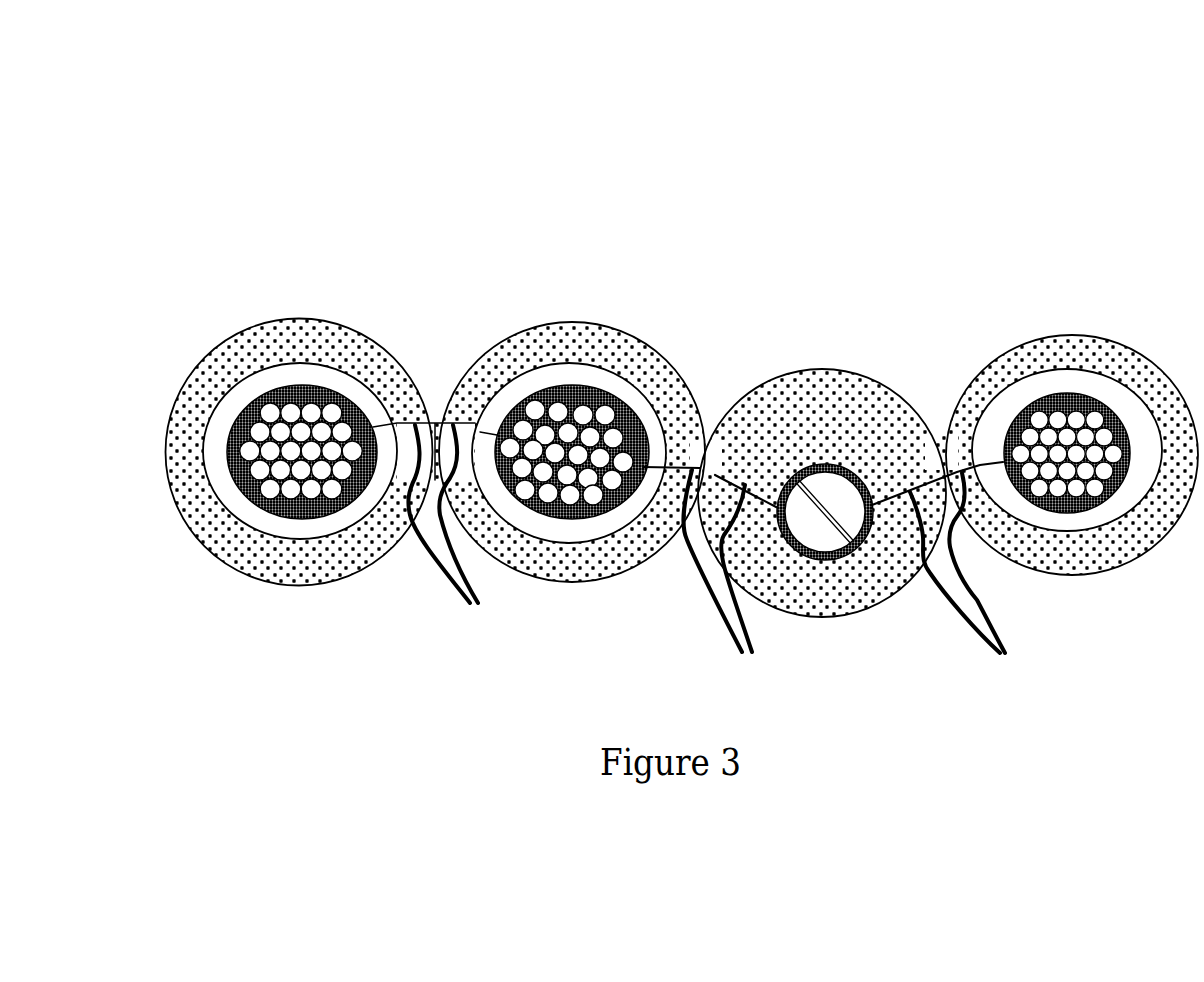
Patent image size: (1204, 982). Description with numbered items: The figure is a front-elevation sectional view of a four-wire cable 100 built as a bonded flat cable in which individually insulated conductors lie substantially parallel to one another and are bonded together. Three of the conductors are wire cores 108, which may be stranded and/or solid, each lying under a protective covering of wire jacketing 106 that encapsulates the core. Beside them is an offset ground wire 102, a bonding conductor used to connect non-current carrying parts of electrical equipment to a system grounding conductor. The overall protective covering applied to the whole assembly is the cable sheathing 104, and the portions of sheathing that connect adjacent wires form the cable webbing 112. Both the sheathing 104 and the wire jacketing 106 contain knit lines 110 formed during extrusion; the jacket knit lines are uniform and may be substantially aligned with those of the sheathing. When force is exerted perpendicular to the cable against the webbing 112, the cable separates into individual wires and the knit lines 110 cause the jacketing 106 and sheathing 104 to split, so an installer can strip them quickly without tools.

The four-wire cable 100 is at (247, 138).
The offset ground wire 102 is at (815, 558).
The cable sheathing 104 is at (288, 588).
The wire jacketing 106 is at (310, 362).
The wire core 108 is at (255, 408).
The knit lines 110 is at (720, 557).
The cable webbing 112 is at (435, 415).